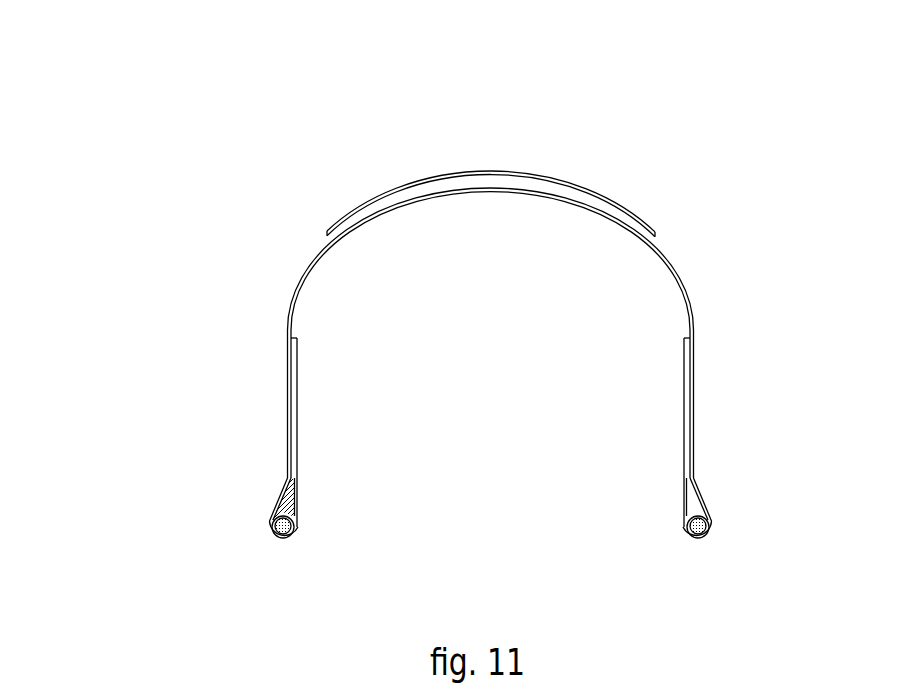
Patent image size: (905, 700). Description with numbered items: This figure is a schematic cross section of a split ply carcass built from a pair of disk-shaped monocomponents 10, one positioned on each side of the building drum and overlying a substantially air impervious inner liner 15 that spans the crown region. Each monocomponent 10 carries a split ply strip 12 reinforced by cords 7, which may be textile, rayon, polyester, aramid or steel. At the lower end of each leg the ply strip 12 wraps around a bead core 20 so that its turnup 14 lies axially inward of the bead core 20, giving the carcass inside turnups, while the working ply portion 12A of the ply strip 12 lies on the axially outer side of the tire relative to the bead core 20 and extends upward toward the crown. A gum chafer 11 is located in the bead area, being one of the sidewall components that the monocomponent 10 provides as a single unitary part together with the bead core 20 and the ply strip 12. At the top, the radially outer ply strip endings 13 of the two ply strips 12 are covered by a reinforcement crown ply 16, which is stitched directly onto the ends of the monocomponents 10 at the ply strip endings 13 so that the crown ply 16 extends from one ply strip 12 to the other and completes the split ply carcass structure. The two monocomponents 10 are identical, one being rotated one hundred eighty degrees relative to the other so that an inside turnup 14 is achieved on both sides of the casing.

The disk-shaped monocomponent 10 is at (257, 398).
The split ply strip 12 is at (305, 258).
The cords 7 is at (491, 266).
The inner liner 15 is at (462, 198).
The working ply portion 12A is at (282, 295).
The turnup 14 is at (290, 495).
The gum chafer 11 is at (283, 531).
The bead core 20 is at (277, 532).
The reinforcement crown ply 16 is at (550, 160).
The ply strip ending 13 is at (338, 226).